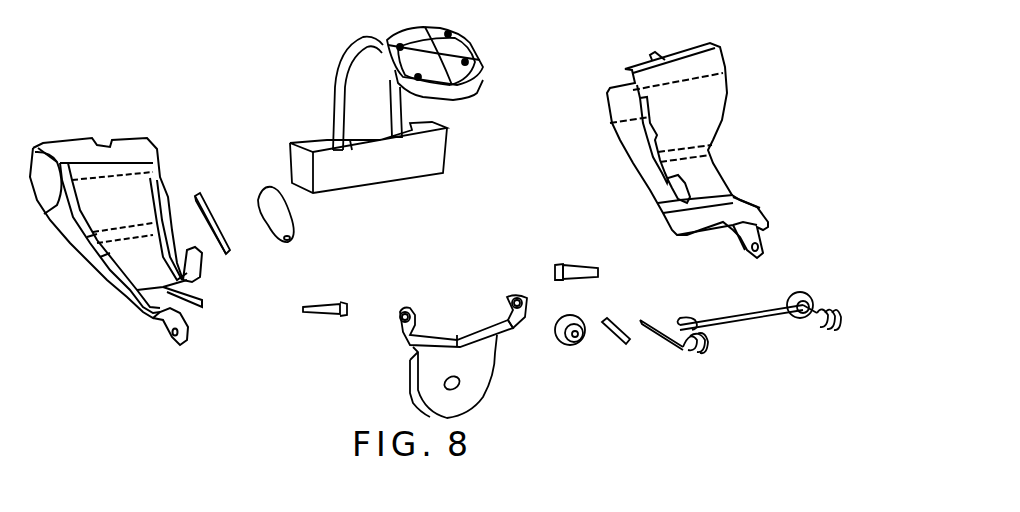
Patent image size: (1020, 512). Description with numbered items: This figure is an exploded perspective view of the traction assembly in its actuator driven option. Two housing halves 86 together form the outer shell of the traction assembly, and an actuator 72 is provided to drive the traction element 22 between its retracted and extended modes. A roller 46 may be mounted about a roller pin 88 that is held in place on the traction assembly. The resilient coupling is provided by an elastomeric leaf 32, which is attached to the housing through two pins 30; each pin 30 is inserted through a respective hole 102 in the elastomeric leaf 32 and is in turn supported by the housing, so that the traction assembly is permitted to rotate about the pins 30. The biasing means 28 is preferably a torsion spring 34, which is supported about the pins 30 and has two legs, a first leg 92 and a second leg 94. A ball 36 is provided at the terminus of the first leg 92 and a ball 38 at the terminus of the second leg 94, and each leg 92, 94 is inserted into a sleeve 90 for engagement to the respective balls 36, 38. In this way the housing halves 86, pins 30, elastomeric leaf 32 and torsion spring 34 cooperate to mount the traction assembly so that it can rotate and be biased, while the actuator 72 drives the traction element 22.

The traction element 22 is at (470, 47).
The biasing means 28 is at (482, 291).
The pin 30 is at (323, 277).
The elastomeric leaf 32 is at (492, 385).
The torsion spring 34 is at (727, 320).
The ball 36 is at (570, 348).
The ball 38 is at (800, 292).
The roller 46 is at (293, 217).
The actuator 72 is at (442, 155).
The housing halves 86 is at (106, 145).
The roller pin 88 is at (215, 195).
The sleeve 90 is at (618, 320).
The first leg 92 is at (650, 338).
The second leg 94 is at (817, 310).
The hole 102 is at (510, 290).